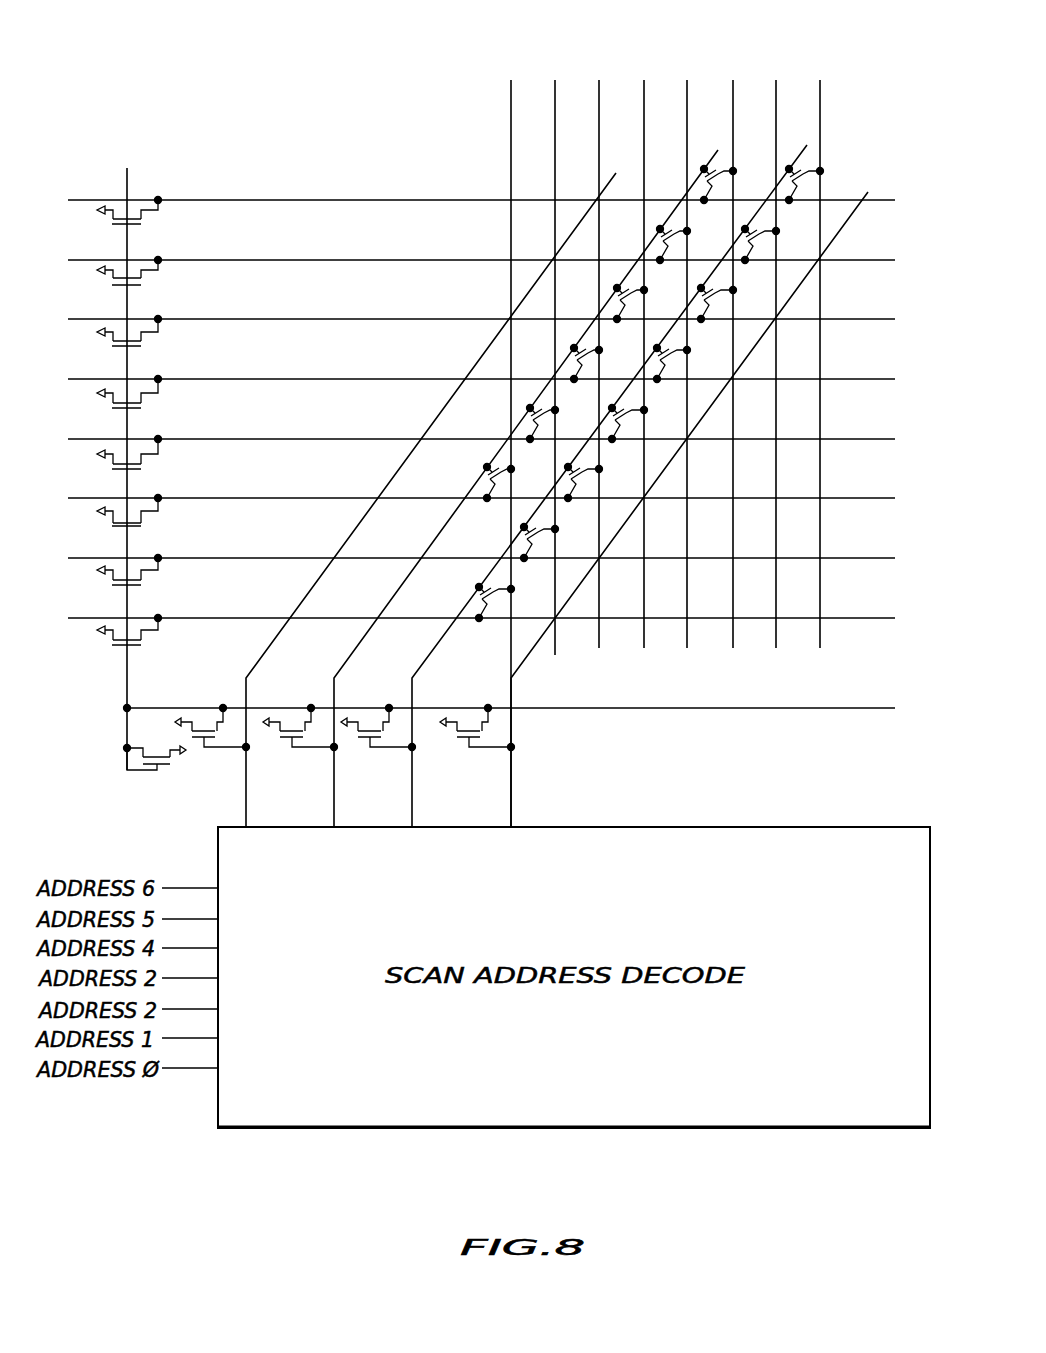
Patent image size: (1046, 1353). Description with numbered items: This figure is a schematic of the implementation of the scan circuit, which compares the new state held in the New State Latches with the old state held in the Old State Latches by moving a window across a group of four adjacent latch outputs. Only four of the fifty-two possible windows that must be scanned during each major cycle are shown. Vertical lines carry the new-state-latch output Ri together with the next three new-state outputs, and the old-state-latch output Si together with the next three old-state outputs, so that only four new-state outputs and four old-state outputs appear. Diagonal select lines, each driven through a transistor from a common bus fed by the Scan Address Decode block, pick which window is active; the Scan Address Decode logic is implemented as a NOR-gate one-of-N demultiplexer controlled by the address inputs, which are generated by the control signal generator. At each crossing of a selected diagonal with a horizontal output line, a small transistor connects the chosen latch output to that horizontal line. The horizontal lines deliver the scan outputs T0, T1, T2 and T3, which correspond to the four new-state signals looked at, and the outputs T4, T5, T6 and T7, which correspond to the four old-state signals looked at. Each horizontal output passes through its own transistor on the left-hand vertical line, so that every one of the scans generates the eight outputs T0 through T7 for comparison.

The scan output T0 is at (480, 203).
The scan output T1 is at (480, 264).
The scan output T2 is at (480, 325).
The scan output T3 is at (480, 386).
The scan output T4 is at (480, 447).
The scan output T5 is at (480, 505).
The scan output T6 is at (480, 564).
The scan output T7 is at (480, 626).
The old-state-latch output S[i] Si is at (772, 339).
The new-state-latch output R[i] Ri is at (816, 339).